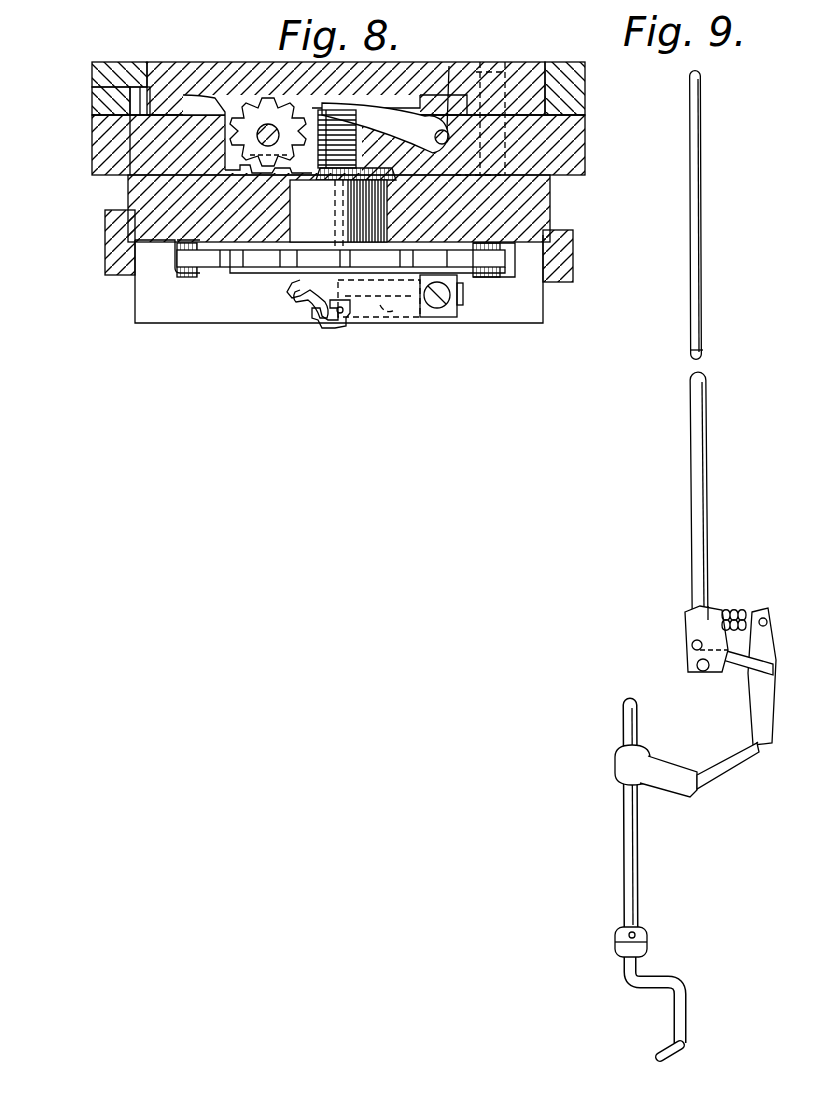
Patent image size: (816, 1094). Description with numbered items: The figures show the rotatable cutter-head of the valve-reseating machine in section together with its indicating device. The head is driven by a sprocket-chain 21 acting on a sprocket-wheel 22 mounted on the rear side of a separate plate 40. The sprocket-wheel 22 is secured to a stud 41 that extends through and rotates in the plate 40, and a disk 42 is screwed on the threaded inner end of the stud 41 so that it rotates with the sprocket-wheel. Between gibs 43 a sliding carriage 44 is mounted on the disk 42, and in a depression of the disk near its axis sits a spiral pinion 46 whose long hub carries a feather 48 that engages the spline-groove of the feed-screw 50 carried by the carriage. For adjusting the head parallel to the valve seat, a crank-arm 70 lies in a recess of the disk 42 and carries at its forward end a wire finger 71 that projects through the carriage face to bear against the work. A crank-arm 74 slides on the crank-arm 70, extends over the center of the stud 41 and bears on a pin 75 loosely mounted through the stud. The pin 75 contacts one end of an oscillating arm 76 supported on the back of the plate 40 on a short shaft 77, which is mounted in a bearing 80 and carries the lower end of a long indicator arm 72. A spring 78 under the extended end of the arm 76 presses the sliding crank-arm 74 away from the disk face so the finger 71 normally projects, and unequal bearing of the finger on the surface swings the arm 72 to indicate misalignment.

In FIG. 8, the sprocket-chain 21 is at (180, 278).
In FIG. 8, the sprocket-wheel 22 is at (223, 268).
In FIG. 8, the plate 40 is at (552, 200).
In FIG. 8, the stud 41 is at (338, 214).
In FIG. 8, the disk 42 is at (580, 153).
In FIG. 8, the gibs 43 is at (92, 92).
In FIG. 8, the sliding carriage 44 is at (230, 77).
In FIG. 8, the spiral pinion 46 is at (250, 138).
In FIG. 8, the feather 48 is at (268, 124).
In FIG. 8, the feed-screw 50 is at (283, 125).
In FIG. 8, the crank-arm 70 is at (449, 66).
In FIG. 9, the crank-arm 70 is at (627, 815).
In FIG. 9, the wire finger 71 is at (662, 1050).
In FIG. 8, the long arm 72 is at (440, 308).
In FIG. 9, the long arm 72 is at (701, 246).
In FIG. 8, the crank-arm 74 is at (390, 110).
In FIG. 9, the crank-arm 74 is at (666, 772).
In FIG. 8, the pin 75 is at (324, 108).
In FIG. 9, the pin 75 is at (723, 768).
In FIG. 8, the oscillating arm 76 is at (333, 329).
In FIG. 9, the oscillating arm 76 is at (748, 694).
In FIG. 8, the short shaft 77 is at (460, 298).
In FIG. 9, the short shaft 77 is at (712, 668).
In FIG. 8, the spring 78 is at (287, 284).
In FIG. 9, the spring 78 is at (734, 612).
In FIG. 8, the bearing 80 is at (368, 313).